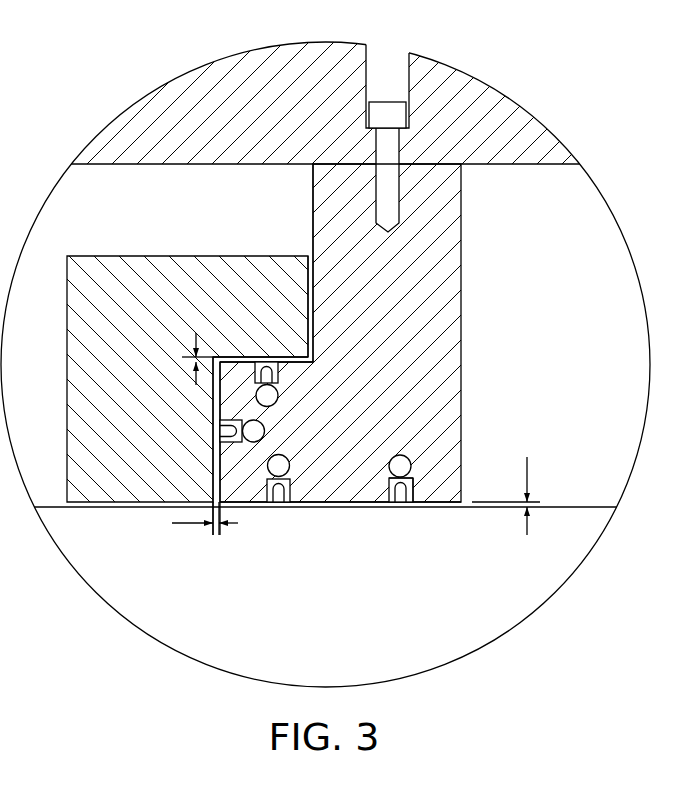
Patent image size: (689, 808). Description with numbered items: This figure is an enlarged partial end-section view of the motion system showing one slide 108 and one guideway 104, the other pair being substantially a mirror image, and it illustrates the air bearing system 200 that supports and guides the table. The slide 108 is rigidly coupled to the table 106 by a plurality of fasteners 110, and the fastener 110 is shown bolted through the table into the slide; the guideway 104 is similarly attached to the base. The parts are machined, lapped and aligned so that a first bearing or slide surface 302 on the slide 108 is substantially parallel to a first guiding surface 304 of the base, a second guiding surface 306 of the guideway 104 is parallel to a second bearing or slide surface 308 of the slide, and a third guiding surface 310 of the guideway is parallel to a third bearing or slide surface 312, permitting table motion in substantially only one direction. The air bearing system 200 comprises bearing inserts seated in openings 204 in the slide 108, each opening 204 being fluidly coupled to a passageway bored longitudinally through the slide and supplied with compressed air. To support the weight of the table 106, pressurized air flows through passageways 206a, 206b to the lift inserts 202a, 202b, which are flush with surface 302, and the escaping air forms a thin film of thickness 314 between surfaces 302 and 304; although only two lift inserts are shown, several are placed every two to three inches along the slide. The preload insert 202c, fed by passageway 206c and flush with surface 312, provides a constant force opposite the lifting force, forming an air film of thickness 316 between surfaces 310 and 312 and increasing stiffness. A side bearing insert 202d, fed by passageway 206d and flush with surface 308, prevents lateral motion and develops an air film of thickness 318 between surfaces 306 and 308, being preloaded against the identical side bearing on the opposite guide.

The guideway 104 is at (188, 256).
The table 106 is at (548, 132).
The slide 108 is at (462, 322).
The fastener 110 is at (388, 102).
The air bearing system 200 is at (248, 574).
The lift bearing insert 202a is at (392, 507).
The lift bearing insert 202b is at (267, 502).
The preload bearing insert 202c is at (262, 360).
The side bearing insert 202d is at (220, 433).
The opening 204 is at (417, 484).
The passageway 206a is at (400, 455).
The passageway 206b is at (290, 465).
The passageway 206c is at (279, 395).
The passageway 206d is at (265, 431).
The first bearing or slide surface 302 is at (343, 507).
The first guiding surface 304 is at (325, 502).
The second guiding surface 306 is at (220, 404).
The second bearing or slide surface 308 is at (217, 485).
The third guiding surface 310 is at (302, 362).
The third bearing or slide surface 312 is at (238, 357).
The air film thickness 314 is at (530, 478).
The air film thickness 316 is at (193, 333).
The air film thickness 318 is at (188, 523).